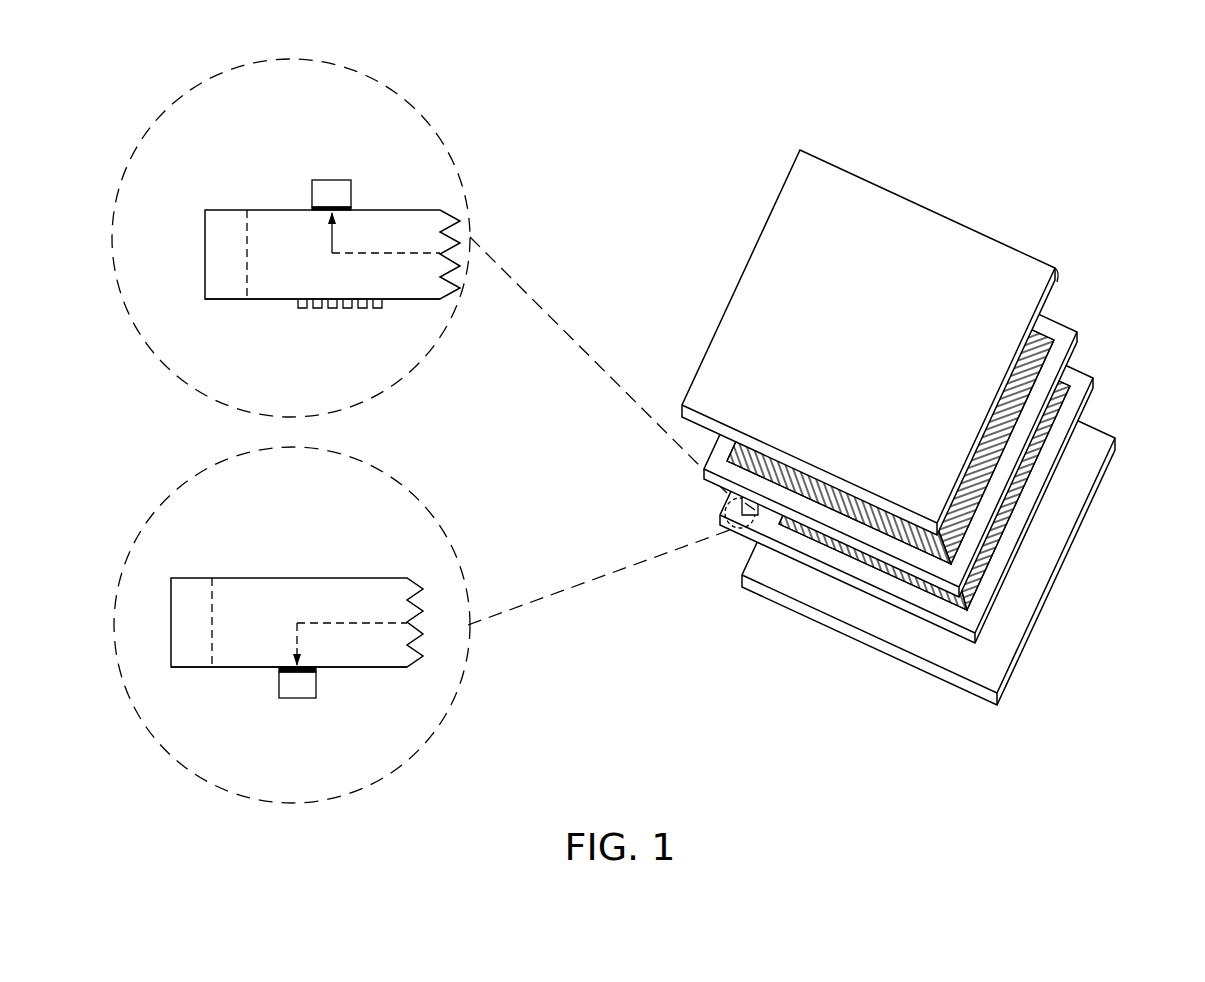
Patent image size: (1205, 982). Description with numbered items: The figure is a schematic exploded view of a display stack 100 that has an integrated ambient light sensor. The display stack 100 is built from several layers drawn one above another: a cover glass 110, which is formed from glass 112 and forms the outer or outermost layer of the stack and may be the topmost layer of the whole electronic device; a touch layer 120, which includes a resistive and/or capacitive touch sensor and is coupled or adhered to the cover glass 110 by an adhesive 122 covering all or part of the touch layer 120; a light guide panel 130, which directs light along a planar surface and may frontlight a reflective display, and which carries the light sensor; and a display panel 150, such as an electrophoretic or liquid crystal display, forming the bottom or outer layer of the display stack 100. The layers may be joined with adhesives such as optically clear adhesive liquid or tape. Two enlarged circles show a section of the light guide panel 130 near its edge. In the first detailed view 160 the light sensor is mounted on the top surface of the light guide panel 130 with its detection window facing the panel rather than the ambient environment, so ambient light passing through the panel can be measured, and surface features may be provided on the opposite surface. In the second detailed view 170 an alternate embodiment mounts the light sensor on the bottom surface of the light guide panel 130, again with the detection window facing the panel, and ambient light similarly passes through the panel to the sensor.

The display stack 100 is at (1023, 103).
The cover glass 110 is at (763, 285).
The glass 112 is at (1060, 277).
The touch layer 120 is at (1075, 345).
The adhesive 122 is at (1040, 340).
The light guide panel 130 is at (1073, 378).
The display panel 150 is at (1090, 477).
The first detailed view 160 is at (420, 90).
The second detailed view 170 is at (404, 462).